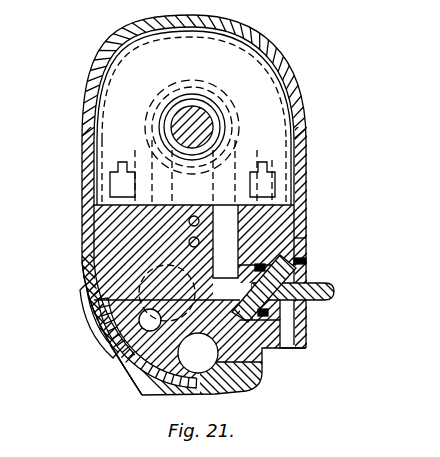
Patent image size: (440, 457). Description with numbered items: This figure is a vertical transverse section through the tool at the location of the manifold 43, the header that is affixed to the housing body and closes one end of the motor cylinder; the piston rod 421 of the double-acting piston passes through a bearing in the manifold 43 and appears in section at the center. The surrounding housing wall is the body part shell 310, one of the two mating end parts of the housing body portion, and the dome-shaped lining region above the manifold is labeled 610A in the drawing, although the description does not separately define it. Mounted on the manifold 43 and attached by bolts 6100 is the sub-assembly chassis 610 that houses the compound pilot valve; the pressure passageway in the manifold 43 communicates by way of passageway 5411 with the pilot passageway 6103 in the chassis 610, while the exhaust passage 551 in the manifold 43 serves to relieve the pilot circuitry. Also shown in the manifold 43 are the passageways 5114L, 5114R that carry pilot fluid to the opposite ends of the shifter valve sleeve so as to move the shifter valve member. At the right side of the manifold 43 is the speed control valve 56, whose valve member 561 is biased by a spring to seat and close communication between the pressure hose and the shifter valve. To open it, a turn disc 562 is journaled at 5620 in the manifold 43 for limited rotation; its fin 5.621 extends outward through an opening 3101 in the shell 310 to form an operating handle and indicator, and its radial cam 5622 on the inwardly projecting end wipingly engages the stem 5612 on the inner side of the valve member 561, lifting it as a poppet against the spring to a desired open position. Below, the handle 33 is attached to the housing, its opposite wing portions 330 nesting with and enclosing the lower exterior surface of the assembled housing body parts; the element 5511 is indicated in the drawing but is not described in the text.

The sub-assembly chassis 610 is at (200, 52).
The body part shell 310 is at (266, 58).
The piston rod 421 is at (200, 122).
The pilot passageway 6103 is at (307, 105).
The bolts 6100 is at (82, 166).
The housing dome 610A is at (86, 116).
The passageway 5411 is at (307, 190).
The journal 5620 is at (293, 238).
The turn disc 562 is at (300, 241).
The opening 3101 is at (305, 251).
The valve member 561 is at (314, 265).
The fin 5.621 is at (336, 292).
The valve 56 is at (320, 314).
The stem 5612 is at (318, 341).
The radial cam 5622 is at (262, 358).
The passageway 5114L is at (189, 221).
The passageway 5114R is at (189, 242).
The manifold 43 is at (128, 264).
The strip 5511 is at (83, 288).
The wing portions 330 is at (138, 304).
The passage 551 is at (138, 327).
The handle 33 is at (123, 357).